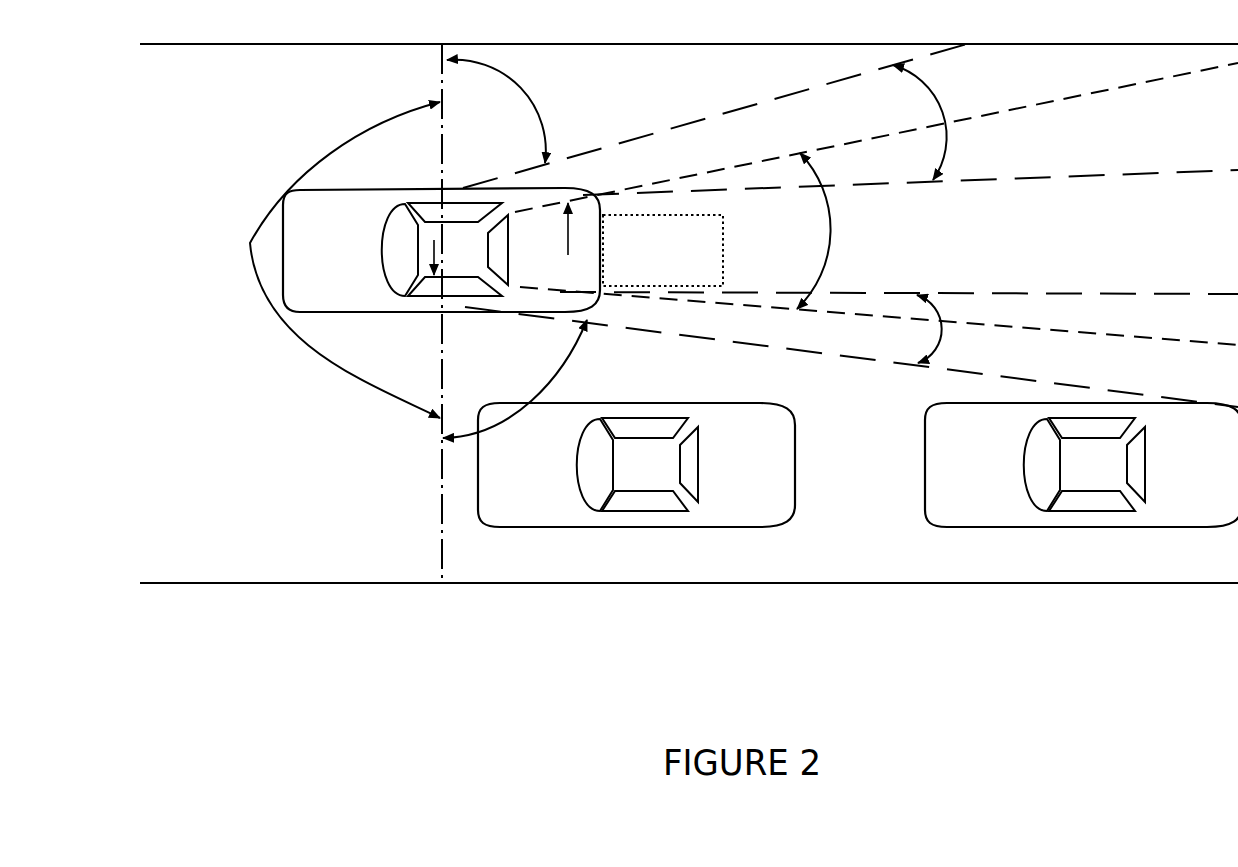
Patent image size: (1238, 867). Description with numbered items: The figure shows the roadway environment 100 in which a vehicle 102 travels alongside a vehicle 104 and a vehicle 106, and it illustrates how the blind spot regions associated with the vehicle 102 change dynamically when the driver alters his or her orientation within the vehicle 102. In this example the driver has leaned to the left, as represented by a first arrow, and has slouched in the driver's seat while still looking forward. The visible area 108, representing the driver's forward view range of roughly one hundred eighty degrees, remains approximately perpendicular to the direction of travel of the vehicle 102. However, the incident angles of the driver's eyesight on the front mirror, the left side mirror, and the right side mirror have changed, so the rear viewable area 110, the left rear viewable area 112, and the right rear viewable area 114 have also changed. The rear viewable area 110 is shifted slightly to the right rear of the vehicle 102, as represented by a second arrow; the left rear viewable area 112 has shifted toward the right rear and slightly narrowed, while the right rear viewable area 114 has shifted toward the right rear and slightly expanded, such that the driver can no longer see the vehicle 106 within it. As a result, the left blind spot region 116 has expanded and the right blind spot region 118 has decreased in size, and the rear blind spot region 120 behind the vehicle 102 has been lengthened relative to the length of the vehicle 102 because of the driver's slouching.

The roadway environment 100 is at (215, 92).
The vehicle 102 is at (347, 269).
The vehicle 104 is at (550, 485).
The vehicle 106 is at (998, 484).
The visible area 108 is at (312, 347).
The rear viewable area 110 is at (823, 265).
The left rear viewable area 112 is at (947, 338).
The right rear viewable area 114 is at (940, 103).
The left blind spot region 116 is at (563, 370).
The right blind spot region 118 is at (533, 112).
The rear blind spot region 120 is at (663, 269).